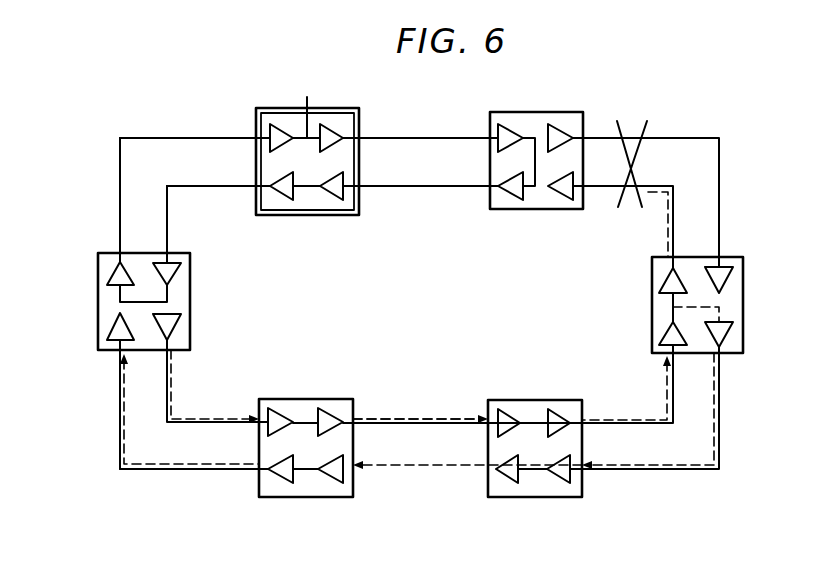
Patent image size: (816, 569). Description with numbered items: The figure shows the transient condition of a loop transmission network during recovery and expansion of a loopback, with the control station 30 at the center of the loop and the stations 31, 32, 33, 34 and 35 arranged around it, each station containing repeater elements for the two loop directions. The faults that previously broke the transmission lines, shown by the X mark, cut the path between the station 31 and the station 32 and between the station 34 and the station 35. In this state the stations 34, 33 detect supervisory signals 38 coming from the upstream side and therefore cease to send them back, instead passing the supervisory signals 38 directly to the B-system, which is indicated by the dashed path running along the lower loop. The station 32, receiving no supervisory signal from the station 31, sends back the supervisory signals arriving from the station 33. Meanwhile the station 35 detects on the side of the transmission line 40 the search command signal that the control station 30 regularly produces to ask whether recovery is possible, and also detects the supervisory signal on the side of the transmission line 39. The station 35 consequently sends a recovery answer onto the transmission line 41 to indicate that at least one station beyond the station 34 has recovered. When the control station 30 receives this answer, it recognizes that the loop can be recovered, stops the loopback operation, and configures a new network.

The control station 30 is at (359, 125).
The station 31 is at (522, 112).
The station 32 is at (730, 257).
The station 33 is at (518, 400).
The station 34 is at (302, 399).
The station 35 is at (190, 283).
The supervisory signals 38 is at (410, 418).
The transmission line 39 is at (120, 407).
The transmission line 40 is at (168, 223).
The transmission line 41 is at (120, 202).